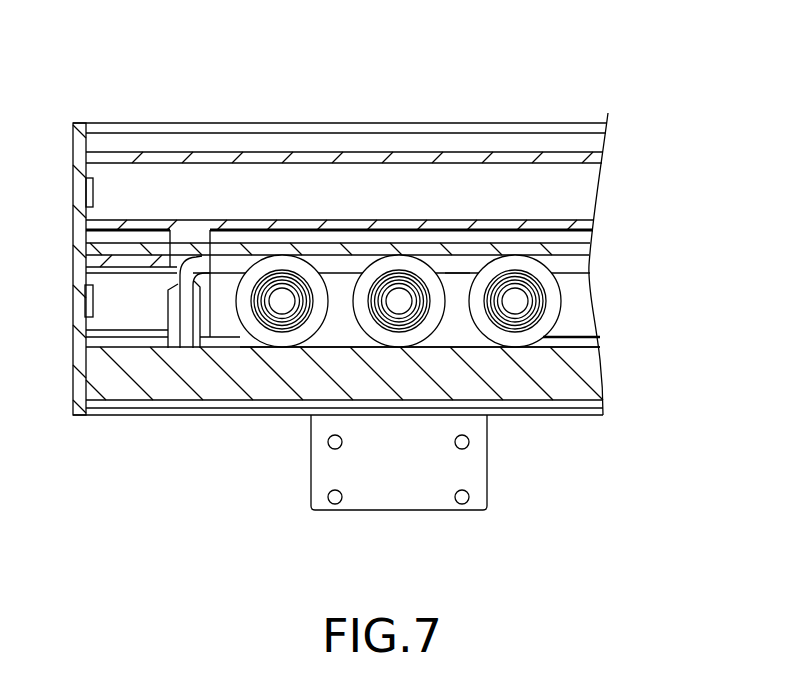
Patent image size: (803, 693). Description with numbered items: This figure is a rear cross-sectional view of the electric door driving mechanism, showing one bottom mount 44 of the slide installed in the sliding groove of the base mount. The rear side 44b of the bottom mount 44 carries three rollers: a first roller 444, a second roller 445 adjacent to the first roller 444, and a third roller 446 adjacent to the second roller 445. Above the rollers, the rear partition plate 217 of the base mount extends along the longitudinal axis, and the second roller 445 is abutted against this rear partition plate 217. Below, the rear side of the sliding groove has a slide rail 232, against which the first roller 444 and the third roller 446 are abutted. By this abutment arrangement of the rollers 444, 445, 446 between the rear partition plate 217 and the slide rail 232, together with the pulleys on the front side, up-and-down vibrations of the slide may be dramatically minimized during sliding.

The rear partition plate 217 is at (392, 248).
The rear side of the bottom mount 44b is at (459, 285).
The slide rail 232 is at (137, 345).
The bottom mount 44 is at (457, 325).
The first roller 444 is at (525, 338).
The second roller 445 is at (390, 337).
The third roller 446 is at (272, 338).